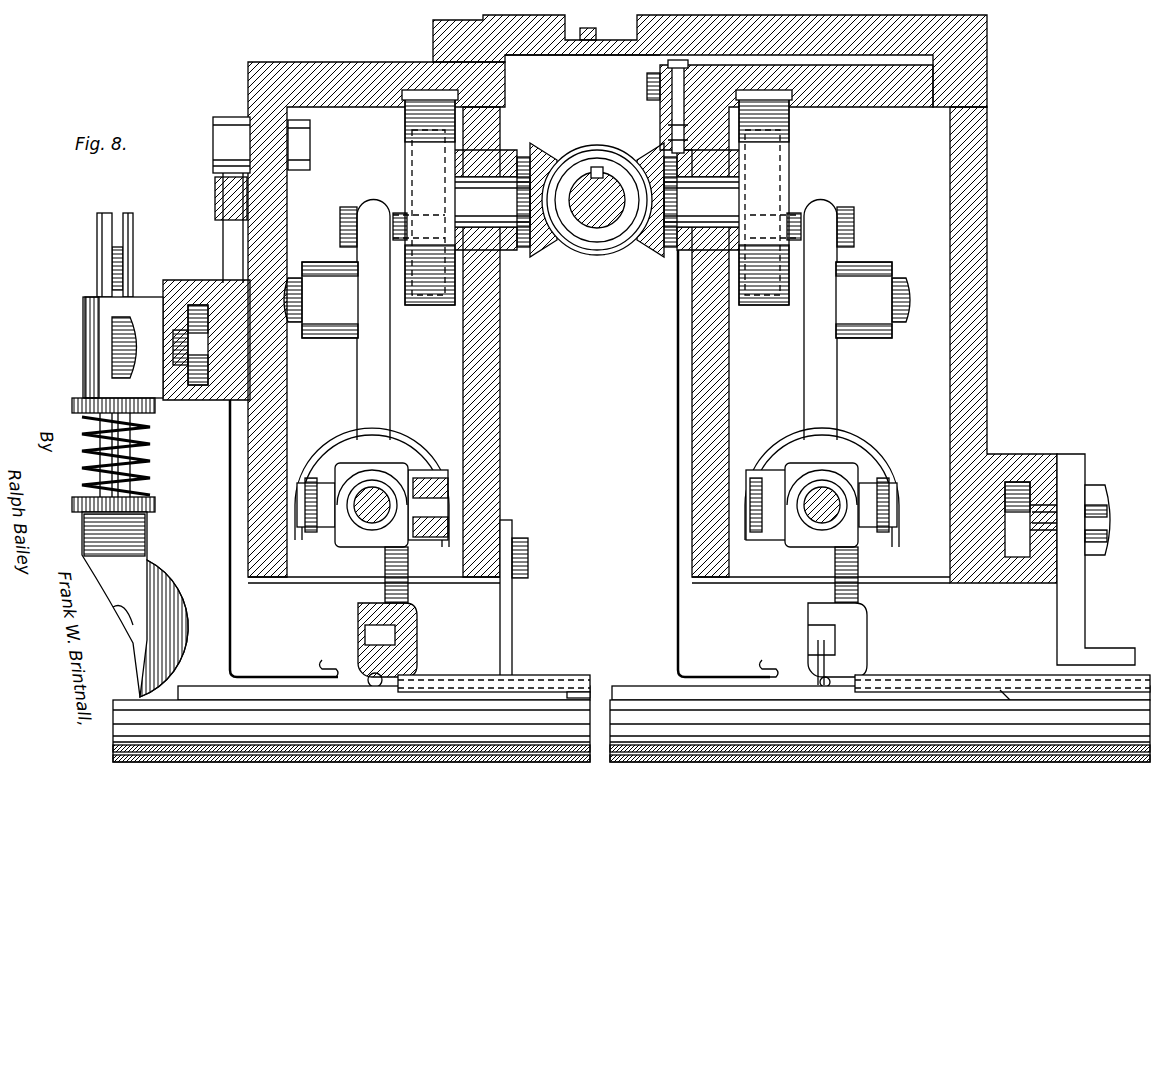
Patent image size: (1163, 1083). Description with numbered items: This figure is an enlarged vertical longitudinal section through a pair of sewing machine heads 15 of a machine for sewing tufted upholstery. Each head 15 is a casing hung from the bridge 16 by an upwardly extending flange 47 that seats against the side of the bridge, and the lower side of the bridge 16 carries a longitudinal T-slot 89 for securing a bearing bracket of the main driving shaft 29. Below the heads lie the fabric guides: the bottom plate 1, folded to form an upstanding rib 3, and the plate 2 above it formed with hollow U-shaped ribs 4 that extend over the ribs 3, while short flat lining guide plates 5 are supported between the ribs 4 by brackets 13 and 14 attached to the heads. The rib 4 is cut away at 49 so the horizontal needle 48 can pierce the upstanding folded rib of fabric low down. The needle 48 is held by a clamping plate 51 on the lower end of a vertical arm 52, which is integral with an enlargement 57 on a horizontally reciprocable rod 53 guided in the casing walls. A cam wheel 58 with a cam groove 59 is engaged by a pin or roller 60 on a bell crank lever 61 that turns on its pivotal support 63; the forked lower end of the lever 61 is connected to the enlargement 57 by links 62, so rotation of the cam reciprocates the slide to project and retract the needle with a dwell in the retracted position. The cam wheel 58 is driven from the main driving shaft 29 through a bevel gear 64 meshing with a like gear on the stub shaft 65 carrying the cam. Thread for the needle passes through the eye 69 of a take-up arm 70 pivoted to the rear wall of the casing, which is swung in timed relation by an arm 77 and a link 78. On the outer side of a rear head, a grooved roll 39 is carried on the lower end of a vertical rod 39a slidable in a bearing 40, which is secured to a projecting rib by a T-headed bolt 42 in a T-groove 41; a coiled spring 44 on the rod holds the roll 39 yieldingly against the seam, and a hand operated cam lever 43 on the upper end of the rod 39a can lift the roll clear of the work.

The bottom guide plate 1 is at (232, 762).
The upper guide plate 2 is at (296, 740).
The upstanding rib 3 is at (210, 690).
The hollow rib 4 is at (478, 675).
The lining guide plate 5 is at (582, 690).
The bracket 13 is at (1085, 606).
The bracket 14 is at (512, 660).
The sewing machine head 15 is at (340, 78).
The bridge 16 is at (524, 50).
The main driving shaft 29 is at (603, 218).
The grooved roll 39 is at (165, 595).
The vertical rod 39a is at (97, 286).
The bearing 40 is at (85, 348).
The T-groove 41 is at (193, 305).
The T-headed bolt 42 is at (125, 355).
The cam lever 43 is at (112, 262).
The coiled spring 44 is at (82, 460).
The flange 47 is at (440, 38).
The needle 48 is at (372, 688).
The cut-away 49 is at (412, 680).
The clamping plate 51 is at (360, 610).
The vertical arm 52 is at (408, 570).
The rod 53 is at (370, 500).
The enlargement 57 is at (382, 472).
The cam wheel 58 is at (410, 135).
The cam groove 59 is at (780, 150).
The pin or roller 60 is at (398, 218).
The bell crank lever 61 is at (385, 372).
The link 62 is at (305, 500).
The pivotal support 63 is at (334, 305).
The bevel gear 64 is at (568, 160).
The stub shaft 65 is at (597, 200).
The hooked end or eye 69 is at (546, 653).
The take-up arm 70 is at (228, 523).
The arm 77 is at (672, 115).
The link 78 is at (647, 86).
The T-slot 89 is at (601, 36).